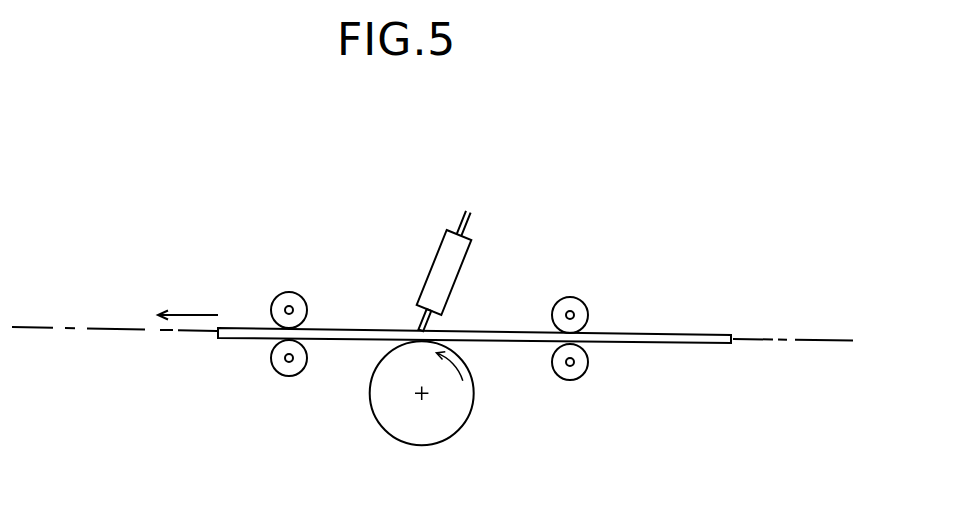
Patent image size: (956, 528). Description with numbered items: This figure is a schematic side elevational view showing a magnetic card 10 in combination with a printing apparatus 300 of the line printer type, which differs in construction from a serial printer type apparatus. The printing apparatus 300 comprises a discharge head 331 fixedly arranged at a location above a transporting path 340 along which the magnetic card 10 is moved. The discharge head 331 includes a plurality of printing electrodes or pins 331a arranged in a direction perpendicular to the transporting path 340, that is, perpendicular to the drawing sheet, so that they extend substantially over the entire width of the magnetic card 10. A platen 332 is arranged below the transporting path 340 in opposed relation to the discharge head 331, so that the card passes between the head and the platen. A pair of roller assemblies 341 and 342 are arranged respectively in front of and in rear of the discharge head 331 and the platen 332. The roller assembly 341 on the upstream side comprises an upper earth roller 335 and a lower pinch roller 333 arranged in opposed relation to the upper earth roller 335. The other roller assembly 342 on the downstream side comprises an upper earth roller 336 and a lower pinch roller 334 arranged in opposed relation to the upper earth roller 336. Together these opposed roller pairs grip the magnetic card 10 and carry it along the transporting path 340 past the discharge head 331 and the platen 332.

The magnetic card 10 is at (682, 336).
The printing apparatus 300 is at (192, 238).
The discharge head 331 is at (447, 277).
The printing electrodes or pins 331a is at (434, 322).
The platen 332 is at (388, 434).
The lower pinch roller 333 is at (582, 374).
The lower pinch roller 334 is at (276, 371).
The upper earth roller 335 is at (582, 315).
The upper earth roller 336 is at (277, 298).
The transporting path 340 is at (125, 330).
The roller assembly 341 is at (586, 282).
The roller assembly 342 is at (316, 284).